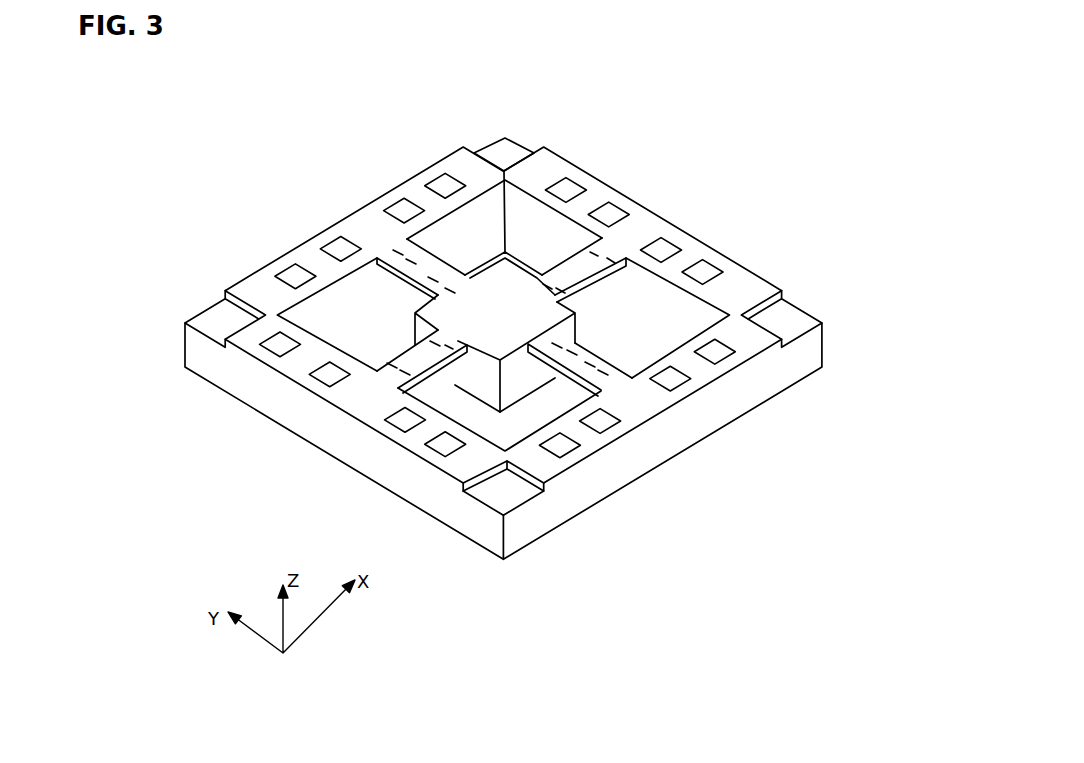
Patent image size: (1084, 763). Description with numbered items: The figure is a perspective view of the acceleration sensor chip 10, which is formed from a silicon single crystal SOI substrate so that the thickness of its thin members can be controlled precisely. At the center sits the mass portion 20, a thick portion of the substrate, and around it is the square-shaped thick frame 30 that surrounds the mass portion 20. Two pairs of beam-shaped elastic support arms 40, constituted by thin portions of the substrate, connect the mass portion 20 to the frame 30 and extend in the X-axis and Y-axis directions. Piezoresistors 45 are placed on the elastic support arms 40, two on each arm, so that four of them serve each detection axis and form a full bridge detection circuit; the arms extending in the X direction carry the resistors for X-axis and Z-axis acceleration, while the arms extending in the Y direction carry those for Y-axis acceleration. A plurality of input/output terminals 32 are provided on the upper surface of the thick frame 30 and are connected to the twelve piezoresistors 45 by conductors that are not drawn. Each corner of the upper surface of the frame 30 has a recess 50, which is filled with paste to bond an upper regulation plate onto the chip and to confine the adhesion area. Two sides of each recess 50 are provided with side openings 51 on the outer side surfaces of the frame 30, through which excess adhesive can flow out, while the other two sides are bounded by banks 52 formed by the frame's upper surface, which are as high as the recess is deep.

The acceleration sensor chip 10 is at (189, 176).
The mass portion 20 is at (473, 307).
The frame 30 is at (288, 422).
The input/output terminals 32 is at (655, 388).
The elastic support arms 40 is at (418, 258).
The piezoresistors 45 is at (612, 258).
The recess 50 is at (508, 146).
The side openings 51 is at (476, 490).
The banks 52 is at (476, 490).